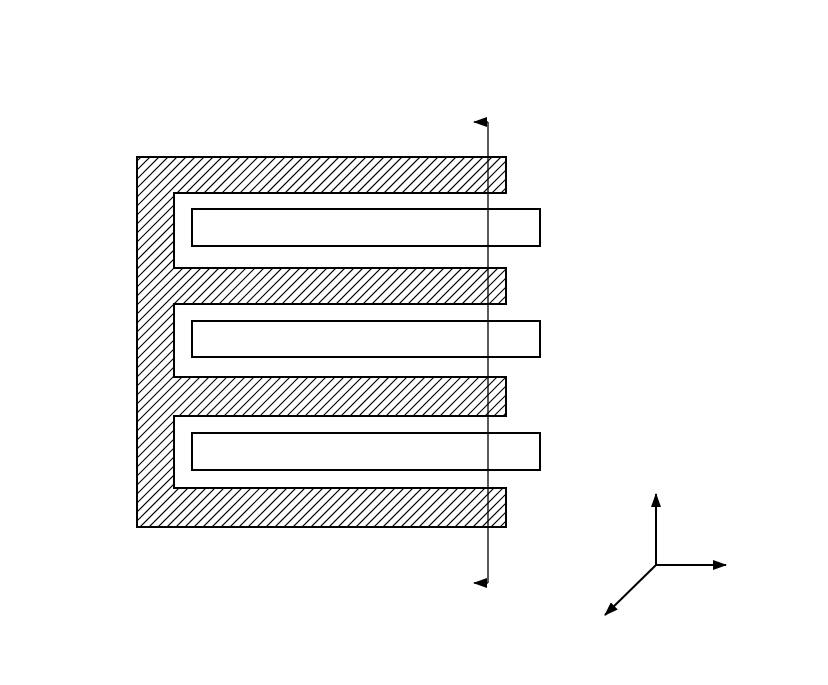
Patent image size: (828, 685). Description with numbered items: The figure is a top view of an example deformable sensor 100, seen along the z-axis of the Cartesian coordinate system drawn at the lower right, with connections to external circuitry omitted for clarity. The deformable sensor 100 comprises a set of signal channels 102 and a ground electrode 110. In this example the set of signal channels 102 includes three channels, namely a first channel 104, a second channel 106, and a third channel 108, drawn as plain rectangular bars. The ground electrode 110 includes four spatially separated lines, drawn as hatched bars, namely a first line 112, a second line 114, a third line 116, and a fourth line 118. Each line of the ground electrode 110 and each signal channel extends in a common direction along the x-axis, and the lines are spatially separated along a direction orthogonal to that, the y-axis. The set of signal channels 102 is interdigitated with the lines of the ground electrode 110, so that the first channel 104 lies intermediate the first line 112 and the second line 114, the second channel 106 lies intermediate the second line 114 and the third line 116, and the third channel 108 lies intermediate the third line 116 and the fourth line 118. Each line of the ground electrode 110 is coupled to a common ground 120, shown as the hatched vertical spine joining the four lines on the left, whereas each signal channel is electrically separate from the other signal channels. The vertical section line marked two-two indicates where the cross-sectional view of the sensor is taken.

The deformable sensor 100 is at (521, 58).
The set of signal channels 102 is at (616, 166).
The first channel 104 is at (524, 209).
The second channel 106 is at (524, 321).
The third channel 108 is at (524, 433).
The ground electrode 110 is at (155, 128).
The first line 112 is at (506, 170).
The second line 114 is at (506, 282).
The third line 116 is at (506, 395).
The fourth line 118 is at (506, 507).
The common ground 120 is at (138, 250).